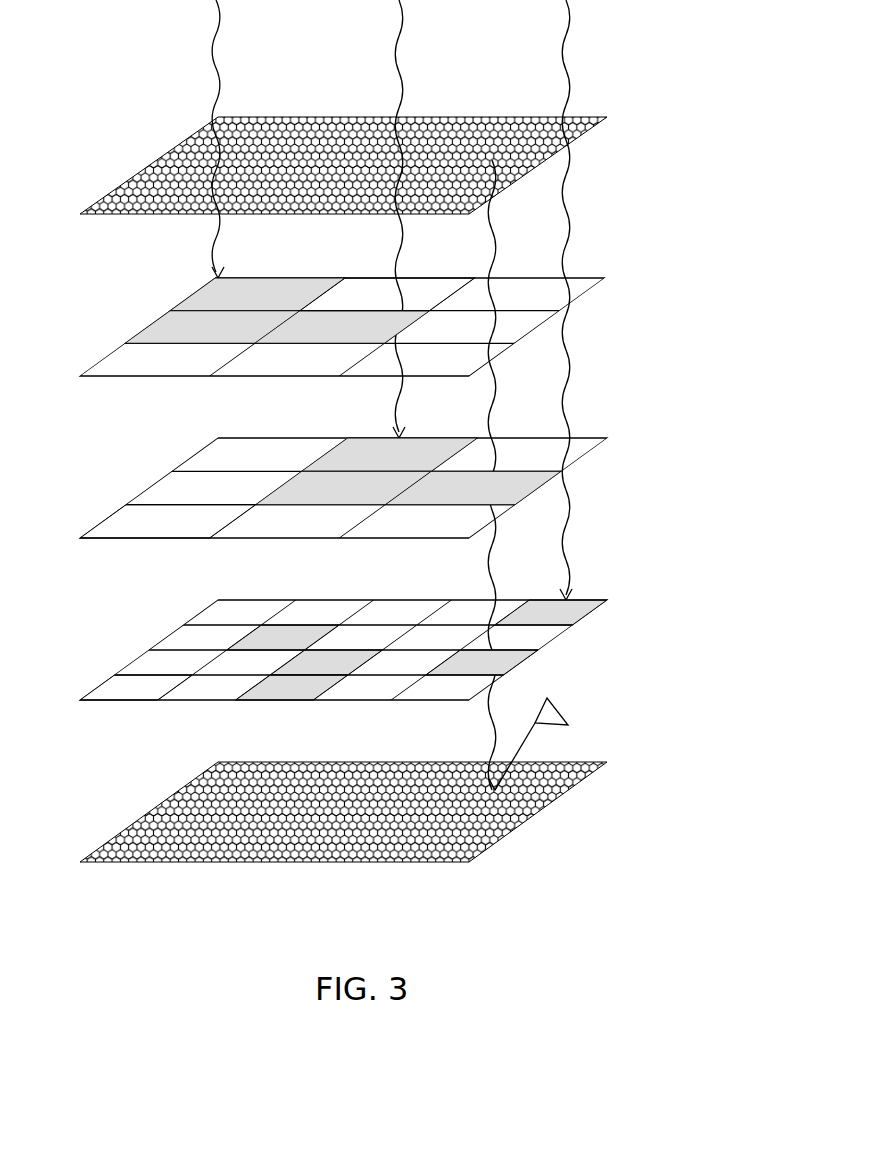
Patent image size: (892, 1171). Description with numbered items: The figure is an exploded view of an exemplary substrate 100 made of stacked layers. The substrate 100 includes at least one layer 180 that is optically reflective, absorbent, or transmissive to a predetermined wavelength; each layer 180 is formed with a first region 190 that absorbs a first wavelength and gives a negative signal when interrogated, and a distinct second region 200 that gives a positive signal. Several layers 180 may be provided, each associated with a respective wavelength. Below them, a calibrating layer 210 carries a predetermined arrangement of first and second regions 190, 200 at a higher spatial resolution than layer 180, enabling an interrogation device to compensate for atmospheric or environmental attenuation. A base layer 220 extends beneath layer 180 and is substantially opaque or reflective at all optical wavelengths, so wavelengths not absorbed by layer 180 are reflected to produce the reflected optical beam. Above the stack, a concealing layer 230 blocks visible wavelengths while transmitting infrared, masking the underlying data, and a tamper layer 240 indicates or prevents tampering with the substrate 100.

The substrate 100 is at (394, 435).
The layer 180 is at (587, 290).
The first region 190 is at (272, 287).
The second region 200 is at (425, 287).
The calibrating layer 210 is at (562, 648).
The base layer 220 is at (562, 808).
The concealing layer 230 is at (410, 165).
The tamper layer 240 is at (612, 132).